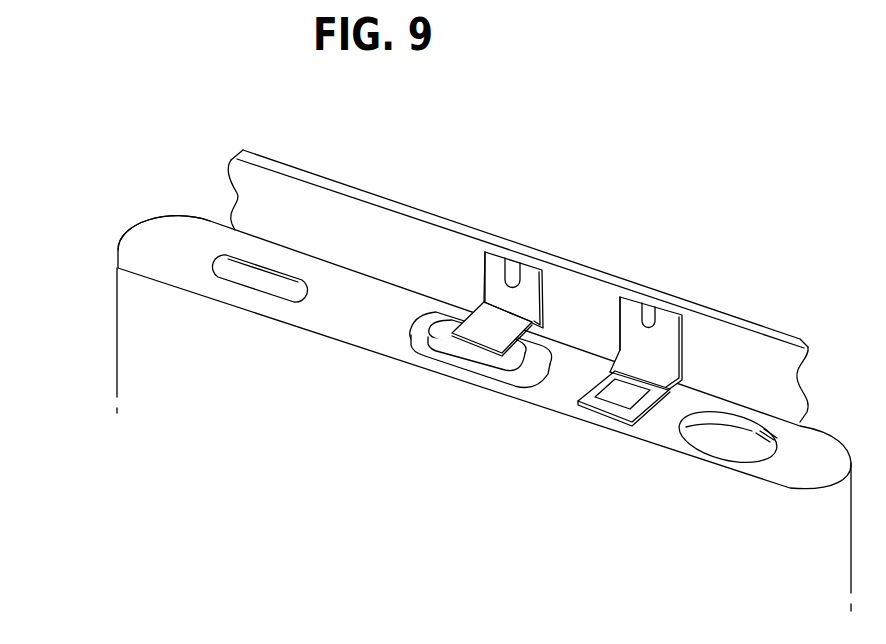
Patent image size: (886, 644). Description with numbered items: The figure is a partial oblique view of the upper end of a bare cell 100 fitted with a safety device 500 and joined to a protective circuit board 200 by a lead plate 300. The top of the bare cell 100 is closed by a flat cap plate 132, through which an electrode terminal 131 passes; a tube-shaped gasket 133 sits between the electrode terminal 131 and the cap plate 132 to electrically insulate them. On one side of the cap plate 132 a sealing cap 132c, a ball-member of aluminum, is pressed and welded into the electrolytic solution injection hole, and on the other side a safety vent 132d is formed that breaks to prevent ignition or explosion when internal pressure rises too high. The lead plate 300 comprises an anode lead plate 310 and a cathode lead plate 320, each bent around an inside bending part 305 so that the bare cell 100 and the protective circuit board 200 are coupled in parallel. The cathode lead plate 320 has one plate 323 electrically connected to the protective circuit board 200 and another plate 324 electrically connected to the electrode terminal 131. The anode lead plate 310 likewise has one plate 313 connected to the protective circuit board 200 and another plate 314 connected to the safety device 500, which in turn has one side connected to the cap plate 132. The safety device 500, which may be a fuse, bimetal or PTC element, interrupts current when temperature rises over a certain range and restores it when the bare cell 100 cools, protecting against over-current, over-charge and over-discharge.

The bare cell 100 is at (162, 320).
The cap plate 132 is at (138, 228).
The sealing cap 132c is at (713, 447).
The safety vent 132d is at (260, 285).
The electrode terminal 131 is at (447, 332).
The gasket 133 is at (492, 372).
The protective circuit board 200 is at (755, 330).
The lead plate 300 is at (664, 208).
The inside bending part 305 is at (485, 300).
The anode lead plate 310 is at (626, 352).
The plate 313 is at (662, 328).
The plate 314 is at (616, 408).
The cathode lead plate 320 is at (497, 322).
The plate 323 is at (492, 275).
The plate 324 is at (483, 329).
The safety device 500 is at (617, 402).